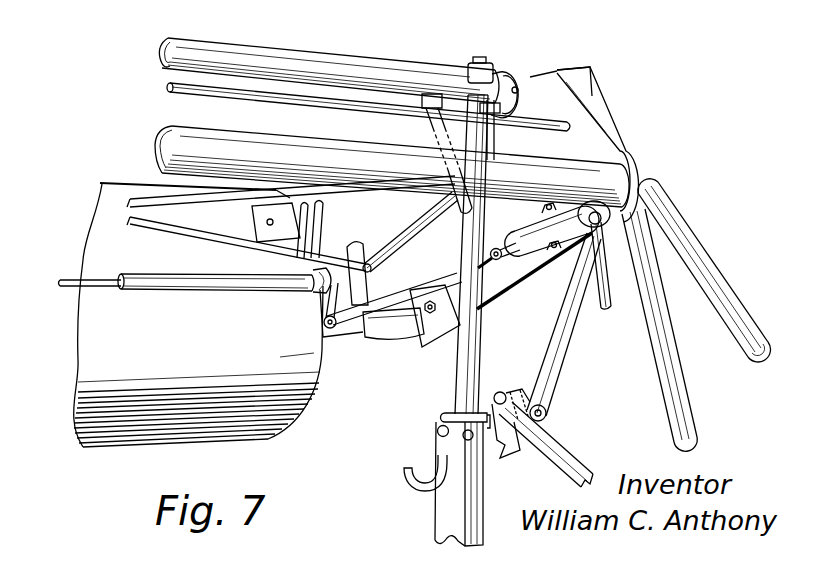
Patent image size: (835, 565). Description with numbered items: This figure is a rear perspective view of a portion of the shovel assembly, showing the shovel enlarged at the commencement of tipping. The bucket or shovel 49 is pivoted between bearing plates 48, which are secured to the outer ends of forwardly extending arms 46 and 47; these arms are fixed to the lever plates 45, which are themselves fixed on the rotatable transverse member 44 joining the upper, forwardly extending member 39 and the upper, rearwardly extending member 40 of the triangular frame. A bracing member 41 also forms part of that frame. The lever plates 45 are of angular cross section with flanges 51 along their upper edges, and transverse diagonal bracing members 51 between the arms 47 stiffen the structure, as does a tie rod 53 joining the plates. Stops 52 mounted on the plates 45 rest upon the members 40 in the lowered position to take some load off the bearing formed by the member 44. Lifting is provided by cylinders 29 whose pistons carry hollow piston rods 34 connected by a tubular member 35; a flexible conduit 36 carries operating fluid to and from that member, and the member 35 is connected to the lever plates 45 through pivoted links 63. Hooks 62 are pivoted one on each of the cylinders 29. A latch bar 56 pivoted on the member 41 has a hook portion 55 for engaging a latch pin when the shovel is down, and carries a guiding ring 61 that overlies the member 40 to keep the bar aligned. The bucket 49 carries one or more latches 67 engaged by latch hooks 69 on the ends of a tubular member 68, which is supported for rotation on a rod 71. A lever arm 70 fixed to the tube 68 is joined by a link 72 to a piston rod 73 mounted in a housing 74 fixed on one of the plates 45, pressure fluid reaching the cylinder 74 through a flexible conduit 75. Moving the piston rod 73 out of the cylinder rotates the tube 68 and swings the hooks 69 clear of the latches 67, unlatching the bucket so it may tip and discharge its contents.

The cylinder 29 is at (474, 513).
The piston rod 34 is at (456, 375).
The tubular member 35 is at (341, 63).
The flexible conduit 36 is at (432, 124).
The upper, forwardly extending member 39 is at (711, 278).
The upper, rearwardly extending member 40 is at (556, 325).
The bracing member 41 is at (674, 382).
The transverse member 44 is at (607, 173).
The lever plate 45 is at (594, 130).
The forwardly extending arm 46 is at (400, 328).
The forwardly extending arm 47 is at (406, 237).
The bearing plate 48 is at (370, 285).
The bucket or shovel 49 is at (300, 403).
The flange 51 is at (583, 84).
The stop 52 is at (446, 337).
The tie rod 53 is at (267, 94).
The hook portion 55 is at (500, 391).
The latch bar 56 is at (562, 465).
The guiding ring 61 is at (547, 416).
The hook 62 is at (412, 477).
The pivoted link 63 is at (516, 145).
The latch 67 is at (265, 247).
The tubular member 68 is at (224, 292).
The latch hook 69 is at (313, 226).
The lever arm 70 is at (335, 297).
The rod 71 is at (78, 278).
The link 72 is at (413, 292).
The piston rod 73 is at (508, 259).
The housing 74 is at (540, 257).
The flexible conduit 75 is at (608, 300).